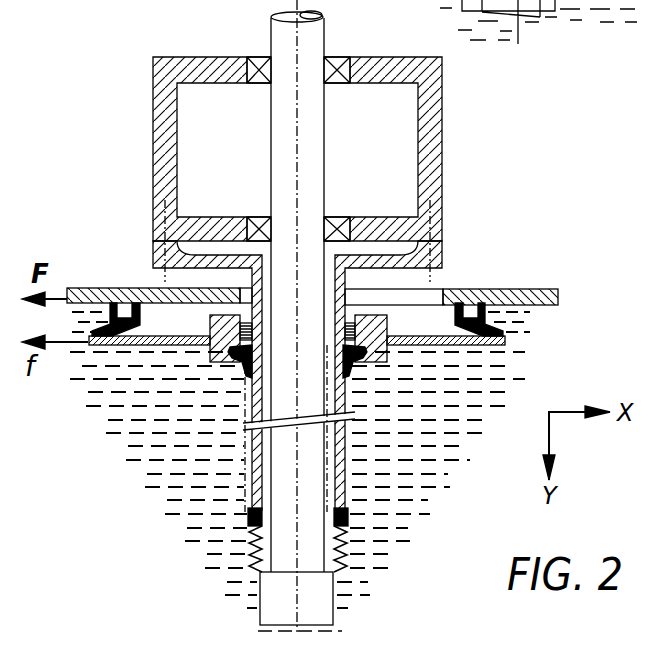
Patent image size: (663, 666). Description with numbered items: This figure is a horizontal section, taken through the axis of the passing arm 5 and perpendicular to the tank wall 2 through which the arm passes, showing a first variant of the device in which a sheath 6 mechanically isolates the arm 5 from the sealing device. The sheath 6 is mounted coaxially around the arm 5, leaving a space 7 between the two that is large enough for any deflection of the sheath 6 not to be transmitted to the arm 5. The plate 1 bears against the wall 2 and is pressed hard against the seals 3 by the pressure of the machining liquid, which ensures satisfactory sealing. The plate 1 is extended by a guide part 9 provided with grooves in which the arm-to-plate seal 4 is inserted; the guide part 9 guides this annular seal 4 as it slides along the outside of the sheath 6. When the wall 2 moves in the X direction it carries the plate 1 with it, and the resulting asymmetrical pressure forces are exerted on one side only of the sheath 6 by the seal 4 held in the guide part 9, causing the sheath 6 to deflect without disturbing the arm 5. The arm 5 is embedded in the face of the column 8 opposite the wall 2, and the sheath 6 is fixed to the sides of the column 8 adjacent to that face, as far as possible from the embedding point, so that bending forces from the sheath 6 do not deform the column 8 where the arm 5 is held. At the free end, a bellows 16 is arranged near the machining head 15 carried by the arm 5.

The plate 1 is at (438, 338).
The wall 2 is at (537, 291).
The seals 3 is at (126, 290).
The arm-to-plate seal 4 is at (350, 364).
The arm 5 is at (292, 539).
The sheath 6 is at (334, 484).
The space 7 is at (337, 466).
The column 8 is at (162, 123).
The guide part 9 is at (210, 328).
The machining head 15 is at (324, 606).
The bellows 16 is at (340, 542).